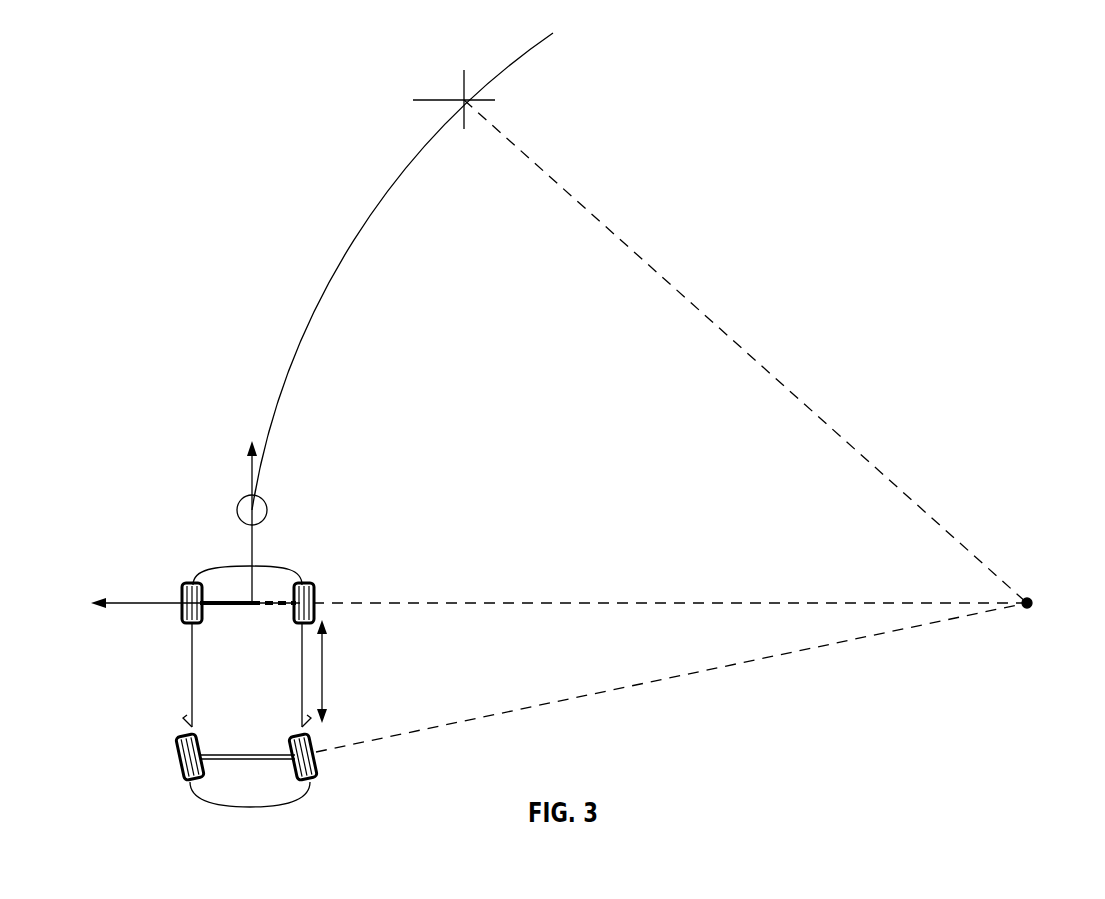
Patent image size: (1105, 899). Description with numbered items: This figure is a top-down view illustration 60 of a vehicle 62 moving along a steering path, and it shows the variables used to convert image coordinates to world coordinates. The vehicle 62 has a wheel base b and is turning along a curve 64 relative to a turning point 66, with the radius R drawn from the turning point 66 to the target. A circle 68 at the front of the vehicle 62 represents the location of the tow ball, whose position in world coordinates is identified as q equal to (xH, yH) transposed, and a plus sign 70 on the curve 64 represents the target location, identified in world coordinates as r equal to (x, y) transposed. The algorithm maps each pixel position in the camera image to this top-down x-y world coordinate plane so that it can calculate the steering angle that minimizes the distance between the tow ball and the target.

The top-down view illustration 60 is at (804, 287).
The vehicle 62 is at (192, 660).
The curve 64 is at (340, 268).
The turning point 66 is at (1030, 598).
The circle 68 is at (240, 500).
The plus sign 70 is at (445, 98).